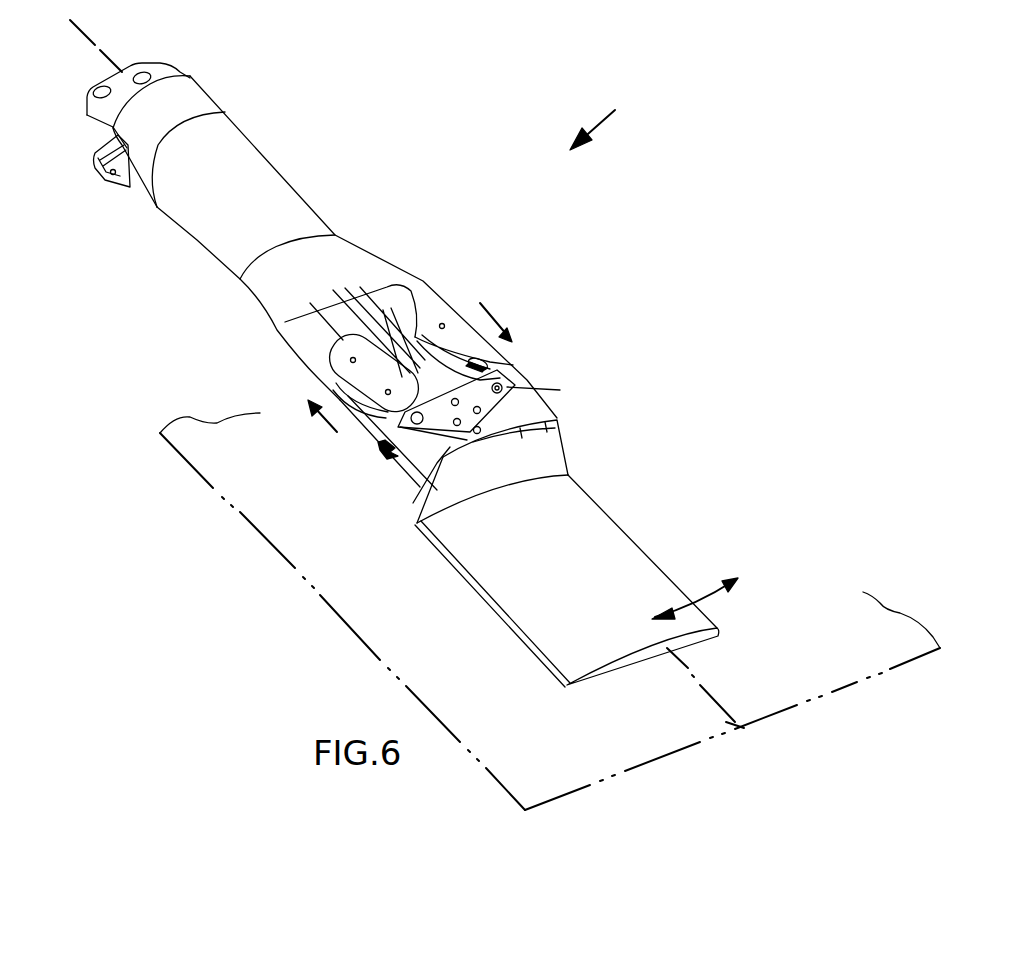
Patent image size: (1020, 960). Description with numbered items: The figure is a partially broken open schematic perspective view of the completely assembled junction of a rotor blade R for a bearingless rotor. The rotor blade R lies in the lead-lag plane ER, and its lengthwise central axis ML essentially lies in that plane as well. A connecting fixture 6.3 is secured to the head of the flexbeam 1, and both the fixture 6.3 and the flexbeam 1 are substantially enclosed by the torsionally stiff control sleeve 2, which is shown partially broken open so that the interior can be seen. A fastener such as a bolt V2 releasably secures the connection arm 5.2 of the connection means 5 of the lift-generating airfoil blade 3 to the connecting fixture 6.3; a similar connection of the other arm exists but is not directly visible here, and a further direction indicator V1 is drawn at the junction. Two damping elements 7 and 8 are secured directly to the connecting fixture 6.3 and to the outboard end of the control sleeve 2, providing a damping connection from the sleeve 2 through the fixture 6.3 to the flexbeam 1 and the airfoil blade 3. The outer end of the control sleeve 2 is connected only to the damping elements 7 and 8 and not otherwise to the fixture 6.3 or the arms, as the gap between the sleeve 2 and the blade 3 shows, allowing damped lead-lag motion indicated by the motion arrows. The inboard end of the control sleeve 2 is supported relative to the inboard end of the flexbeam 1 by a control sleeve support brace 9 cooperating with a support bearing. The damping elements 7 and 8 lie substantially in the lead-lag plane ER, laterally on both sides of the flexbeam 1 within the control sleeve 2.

The flexbeam 1 is at (142, 66).
The control sleeve 2 is at (262, 180).
The airfoil blade 3 is at (602, 530).
The connection means 5 is at (407, 480).
The connection arm 5.2 is at (413, 503).
The connecting fixture 6.3 is at (390, 437).
The damping element 7 is at (333, 360).
The damping element 8 is at (490, 366).
The control sleeve support brace 9 is at (188, 98).
The lengthwise central axis ML is at (70, 20).
The rotor blade R is at (604, 120).
The adjustment direction 1 V1 is at (572, 393).
The bolt V2 is at (383, 430).
The lead-lag plane ER is at (373, 610).